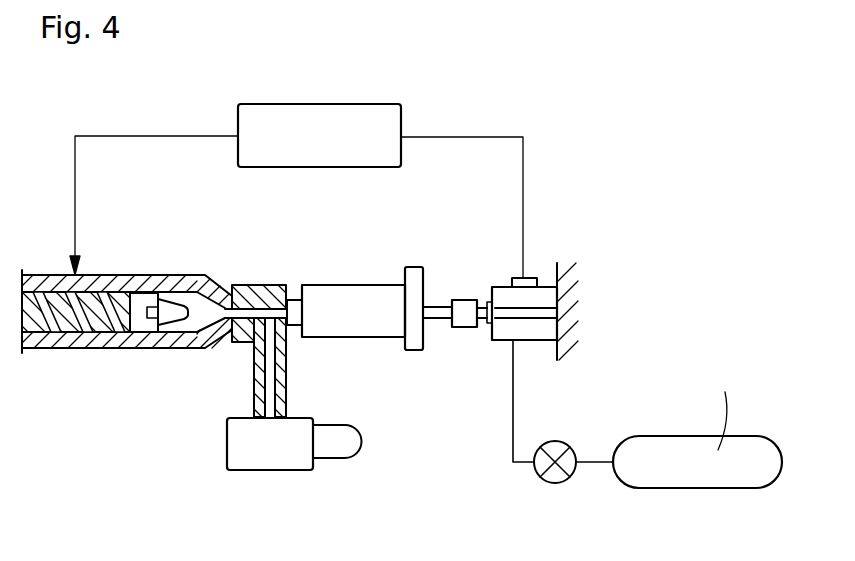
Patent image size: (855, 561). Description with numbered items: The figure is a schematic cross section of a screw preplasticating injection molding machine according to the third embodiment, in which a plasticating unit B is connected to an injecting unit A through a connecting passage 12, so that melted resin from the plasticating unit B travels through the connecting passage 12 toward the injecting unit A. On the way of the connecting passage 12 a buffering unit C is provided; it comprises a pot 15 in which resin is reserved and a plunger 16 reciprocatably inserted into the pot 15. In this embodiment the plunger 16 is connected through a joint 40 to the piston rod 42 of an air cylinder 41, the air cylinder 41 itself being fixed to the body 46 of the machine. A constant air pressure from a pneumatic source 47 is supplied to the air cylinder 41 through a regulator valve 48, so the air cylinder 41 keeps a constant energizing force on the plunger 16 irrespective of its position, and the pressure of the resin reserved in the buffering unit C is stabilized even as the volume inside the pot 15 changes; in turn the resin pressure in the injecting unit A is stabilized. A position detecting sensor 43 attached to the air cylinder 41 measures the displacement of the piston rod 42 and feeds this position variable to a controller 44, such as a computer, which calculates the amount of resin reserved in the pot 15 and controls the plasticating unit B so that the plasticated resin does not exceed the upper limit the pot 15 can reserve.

The controller 44 is at (371, 105).
The plasticating unit B is at (161, 260).
The connecting passage 12 is at (256, 284).
The pot 15 is at (351, 289).
The buffering unit C is at (396, 272).
The plunger 16 is at (440, 306).
The joint 40 is at (469, 300).
The piston rod 42 is at (482, 328).
The air cylinder 41 is at (535, 341).
The position detecting sensor 43 is at (530, 278).
The body 46 is at (571, 301).
The regulator valve 48 is at (548, 481).
The pneumatic source 47 is at (688, 477).
The injecting unit A is at (212, 437).